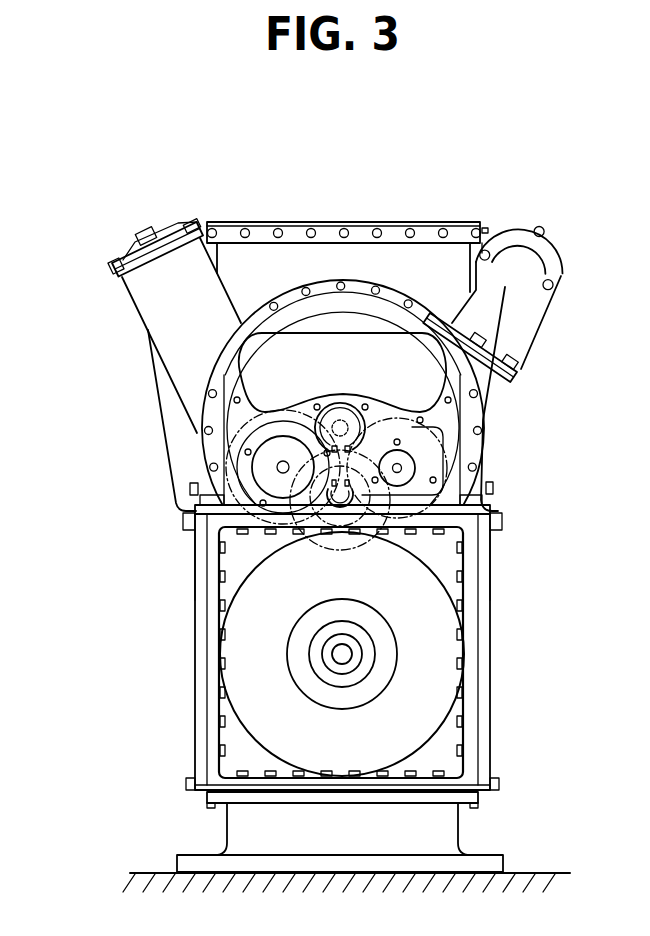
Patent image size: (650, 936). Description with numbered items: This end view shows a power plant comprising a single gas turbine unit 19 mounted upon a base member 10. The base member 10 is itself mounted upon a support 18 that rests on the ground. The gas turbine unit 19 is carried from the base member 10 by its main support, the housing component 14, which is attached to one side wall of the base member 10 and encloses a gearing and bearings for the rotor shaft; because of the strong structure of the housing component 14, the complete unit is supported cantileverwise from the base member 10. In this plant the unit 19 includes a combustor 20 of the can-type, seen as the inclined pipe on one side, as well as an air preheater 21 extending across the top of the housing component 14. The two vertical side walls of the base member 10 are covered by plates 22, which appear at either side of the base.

The base member 10 is at (472, 715).
The housing component 14 is at (258, 680).
The support 18 is at (472, 864).
The gas turbine unit 19 is at (472, 449).
The combustor 20 is at (162, 303).
The air preheater 21 is at (383, 263).
The plates 22 is at (195, 570).